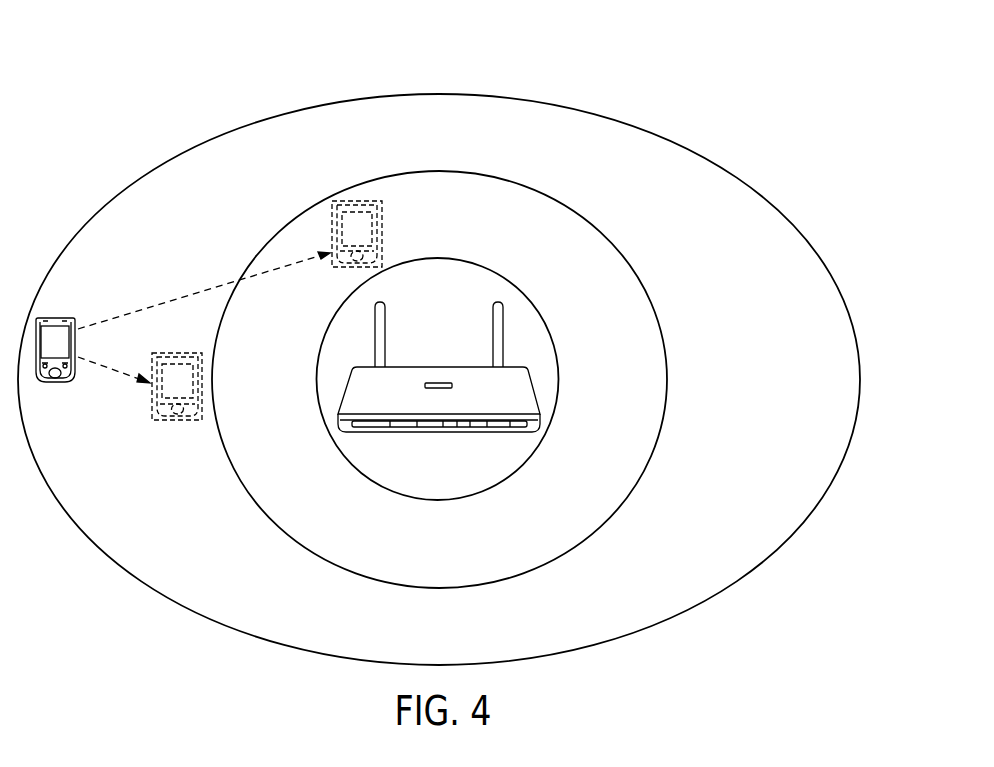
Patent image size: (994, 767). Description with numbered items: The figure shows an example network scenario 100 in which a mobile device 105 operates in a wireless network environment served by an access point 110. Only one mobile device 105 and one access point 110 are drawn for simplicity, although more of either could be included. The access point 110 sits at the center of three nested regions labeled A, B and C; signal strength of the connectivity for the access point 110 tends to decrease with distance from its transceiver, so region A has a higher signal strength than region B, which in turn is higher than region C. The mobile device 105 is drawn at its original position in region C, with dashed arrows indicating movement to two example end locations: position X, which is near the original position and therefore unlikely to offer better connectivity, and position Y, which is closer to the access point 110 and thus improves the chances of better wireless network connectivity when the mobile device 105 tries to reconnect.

The network scenario 100 is at (123, 72).
The mobile device 105 is at (57, 317).
The access point 110 is at (437, 366).